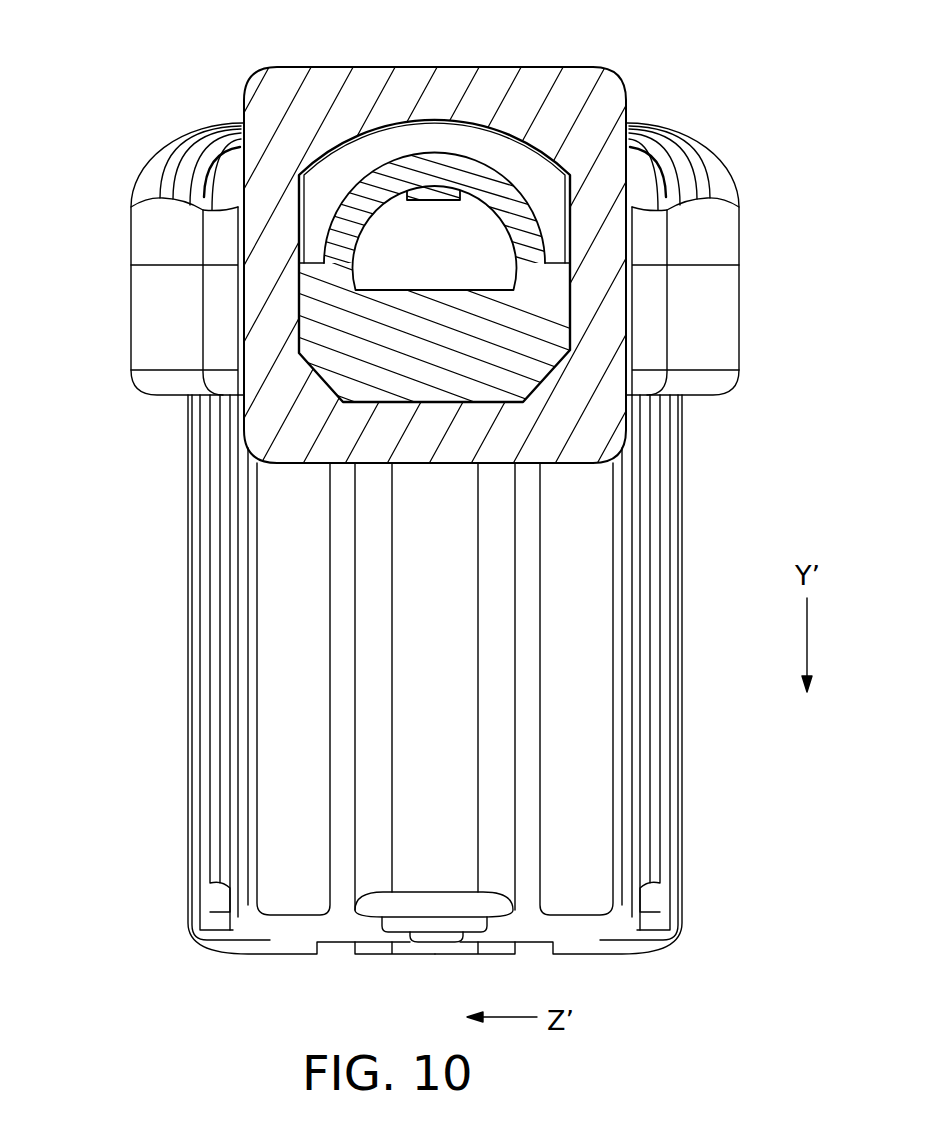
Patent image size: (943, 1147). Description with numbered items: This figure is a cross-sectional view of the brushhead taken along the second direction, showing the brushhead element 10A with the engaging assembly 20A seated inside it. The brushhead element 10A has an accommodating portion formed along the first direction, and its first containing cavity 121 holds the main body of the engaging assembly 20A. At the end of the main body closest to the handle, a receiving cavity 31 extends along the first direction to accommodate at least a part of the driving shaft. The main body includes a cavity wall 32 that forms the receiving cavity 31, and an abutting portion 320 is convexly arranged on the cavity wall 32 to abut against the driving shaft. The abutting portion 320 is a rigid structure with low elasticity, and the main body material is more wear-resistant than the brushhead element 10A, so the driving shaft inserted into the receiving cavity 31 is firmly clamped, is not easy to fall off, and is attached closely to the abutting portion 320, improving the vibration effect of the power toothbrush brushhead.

The brushhead element 10A is at (531, 68).
The first containing cavity 121 is at (296, 285).
The engaging assembly 20A is at (340, 340).
The cavity wall 32 is at (377, 202).
The receiving cavity 31 is at (390, 250).
The abutting portion 320 is at (435, 198).